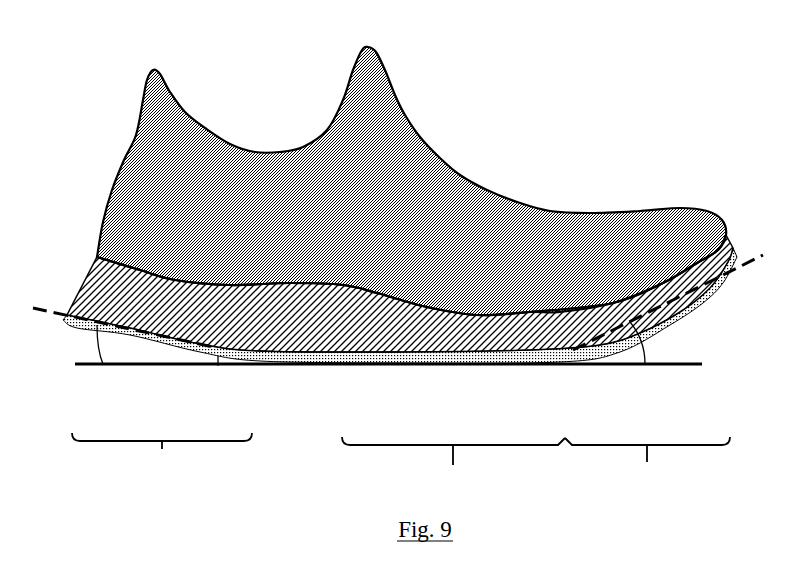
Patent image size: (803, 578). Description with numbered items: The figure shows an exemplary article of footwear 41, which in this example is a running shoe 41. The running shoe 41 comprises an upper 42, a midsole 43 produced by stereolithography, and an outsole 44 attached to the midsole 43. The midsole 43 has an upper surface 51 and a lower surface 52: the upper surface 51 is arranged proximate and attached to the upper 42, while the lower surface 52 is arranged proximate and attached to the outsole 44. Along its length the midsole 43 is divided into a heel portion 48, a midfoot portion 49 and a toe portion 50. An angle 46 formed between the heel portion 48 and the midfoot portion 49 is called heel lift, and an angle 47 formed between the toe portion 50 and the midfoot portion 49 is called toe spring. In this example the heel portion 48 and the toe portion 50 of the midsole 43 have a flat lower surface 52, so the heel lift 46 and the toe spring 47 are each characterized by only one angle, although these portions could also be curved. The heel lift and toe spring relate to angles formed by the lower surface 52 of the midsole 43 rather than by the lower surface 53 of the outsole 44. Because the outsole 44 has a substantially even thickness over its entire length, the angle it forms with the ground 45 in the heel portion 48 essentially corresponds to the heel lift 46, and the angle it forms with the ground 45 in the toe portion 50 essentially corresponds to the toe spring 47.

The article of footwear 41 is at (93, 69).
The upper 42 is at (552, 225).
The midsole 43 is at (115, 295).
The outsole 44 is at (78, 327).
The ground 45 is at (293, 366).
The heel lift 46 is at (117, 347).
The toe spring 47 is at (625, 351).
The heel portion 48 is at (162, 456).
The midfoot portion 49 is at (453, 460).
The toe portion 50 is at (647, 460).
The upper surface 51 is at (163, 275).
The lower surface 52 is at (330, 352).
The lower surface of the outsole 53 is at (218, 357).